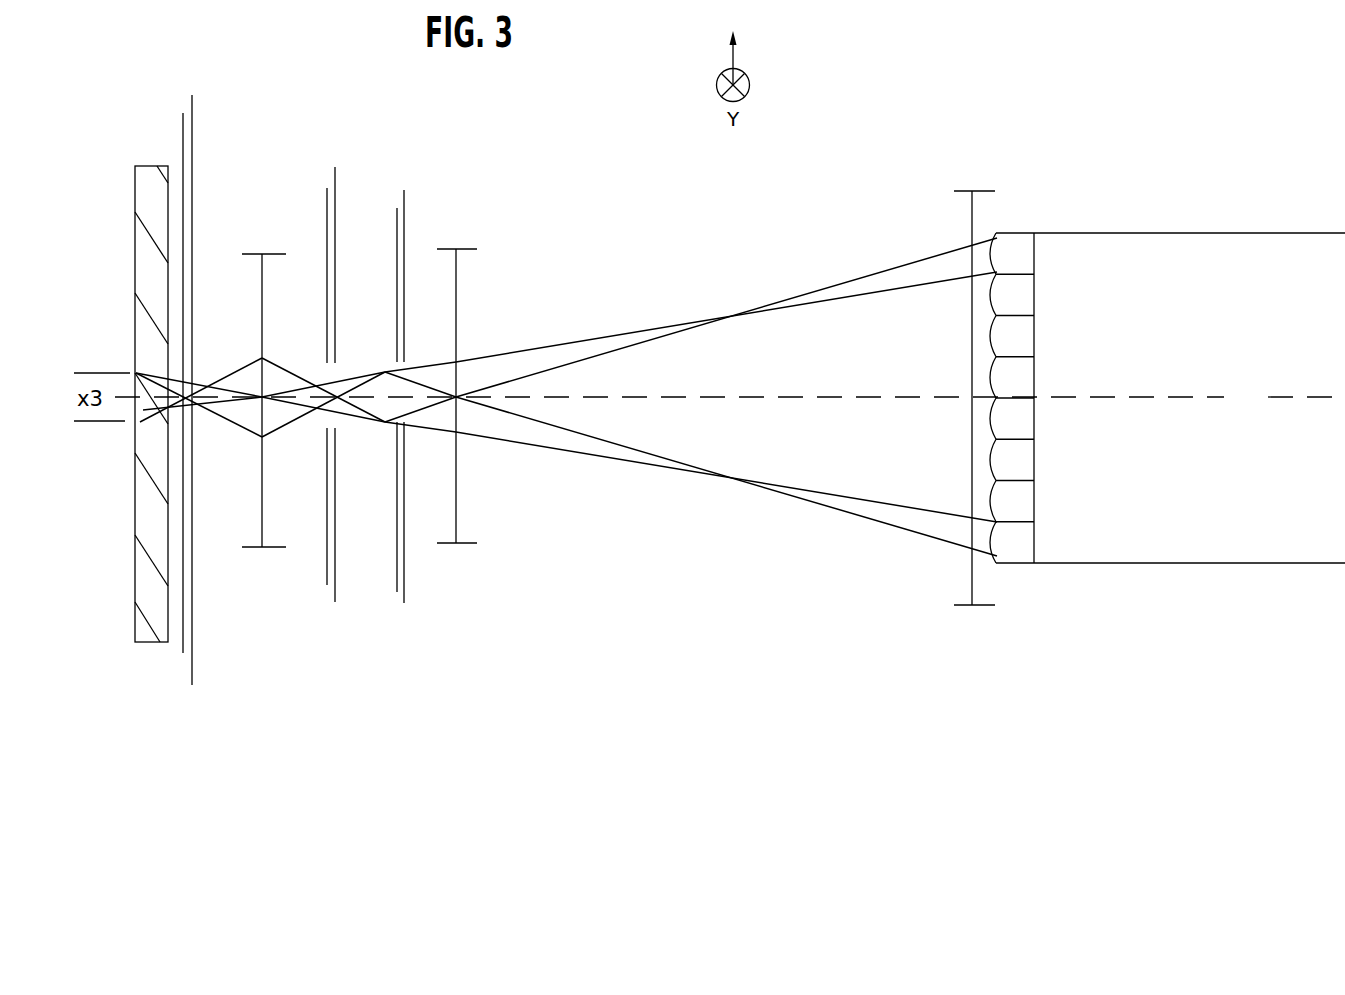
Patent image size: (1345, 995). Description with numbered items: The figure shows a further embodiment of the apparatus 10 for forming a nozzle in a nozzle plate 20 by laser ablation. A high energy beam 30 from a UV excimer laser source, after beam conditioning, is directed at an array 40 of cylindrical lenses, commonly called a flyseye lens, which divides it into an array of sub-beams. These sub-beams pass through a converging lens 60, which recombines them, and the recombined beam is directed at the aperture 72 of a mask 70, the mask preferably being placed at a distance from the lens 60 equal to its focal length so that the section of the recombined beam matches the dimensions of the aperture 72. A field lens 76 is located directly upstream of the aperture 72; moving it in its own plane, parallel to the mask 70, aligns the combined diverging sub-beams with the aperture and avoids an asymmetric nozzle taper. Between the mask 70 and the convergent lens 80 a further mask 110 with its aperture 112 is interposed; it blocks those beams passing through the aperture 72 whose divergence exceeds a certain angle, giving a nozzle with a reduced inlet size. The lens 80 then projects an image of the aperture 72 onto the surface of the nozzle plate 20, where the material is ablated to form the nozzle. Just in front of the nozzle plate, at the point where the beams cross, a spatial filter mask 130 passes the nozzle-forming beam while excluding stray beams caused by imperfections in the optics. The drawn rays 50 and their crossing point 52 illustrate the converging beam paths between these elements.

The apparatus 10 is at (665, 614).
The nozzle plate 20 is at (161, 628).
The high energy beam 30 is at (1189, 398).
The array of optical elements 40 is at (1032, 586).
The light rays 50 is at (913, 518).
The ray crossing point 52 is at (700, 485).
The converging lens 60 is at (983, 607).
The mask 70 is at (404, 560).
The aperture 72 is at (403, 395).
The field lens 76 is at (456, 293).
The convergent lens 80 is at (270, 253).
The further mask 110 is at (337, 578).
The further aperture 112 is at (342, 368).
The spatial filter mask 130 is at (192, 593).